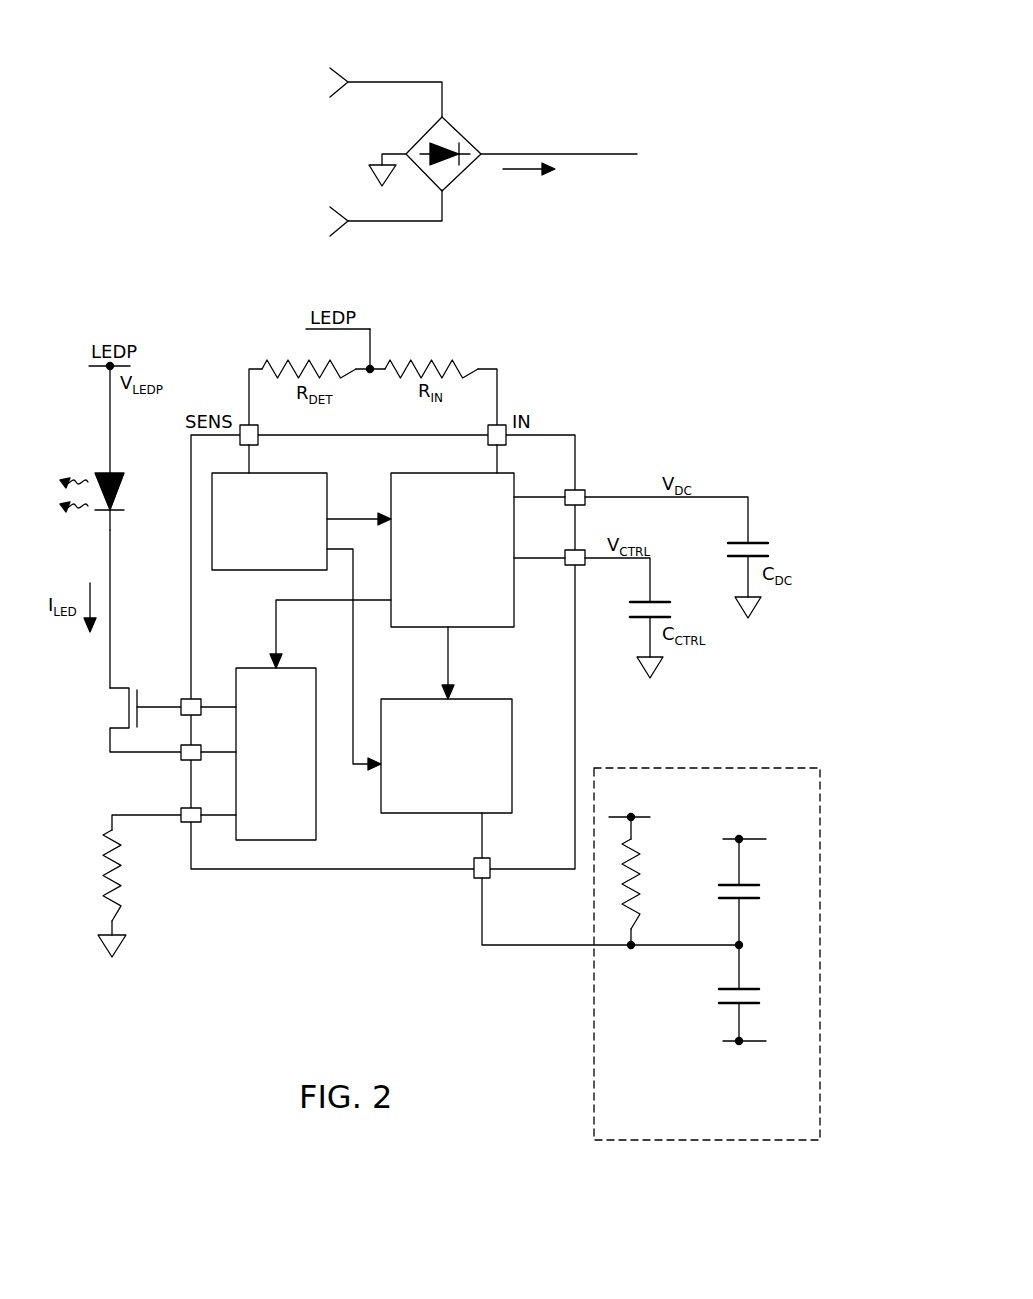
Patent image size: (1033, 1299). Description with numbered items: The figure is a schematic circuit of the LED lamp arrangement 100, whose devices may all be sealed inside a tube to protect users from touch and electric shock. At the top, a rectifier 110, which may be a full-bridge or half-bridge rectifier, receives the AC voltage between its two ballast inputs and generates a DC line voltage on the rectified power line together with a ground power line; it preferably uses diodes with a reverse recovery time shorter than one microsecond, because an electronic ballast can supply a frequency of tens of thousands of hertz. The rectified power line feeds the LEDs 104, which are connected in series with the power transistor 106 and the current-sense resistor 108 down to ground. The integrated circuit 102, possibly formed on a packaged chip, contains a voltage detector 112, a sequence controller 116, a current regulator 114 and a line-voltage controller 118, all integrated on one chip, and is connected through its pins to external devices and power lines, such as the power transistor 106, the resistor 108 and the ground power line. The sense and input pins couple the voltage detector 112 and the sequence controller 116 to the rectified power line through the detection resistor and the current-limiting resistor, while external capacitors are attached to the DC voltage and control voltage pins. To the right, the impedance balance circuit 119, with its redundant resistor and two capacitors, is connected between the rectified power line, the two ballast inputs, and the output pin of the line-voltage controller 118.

The LED lamp arrangement 100 is at (625, 78).
The rectifier 110 is at (452, 120).
The LEDs 104 is at (112, 501).
The power transistor 106 is at (127, 720).
The current-sense resistor 108 is at (139, 886).
The integrated circuit 102 is at (383, 651).
The voltage detector 112 is at (269, 521).
The current regulator 114 is at (276, 754).
The sequence controller 116 is at (452, 550).
The line-voltage controller 118 is at (446, 756).
The impedance balance circuit 119 is at (697, 768).